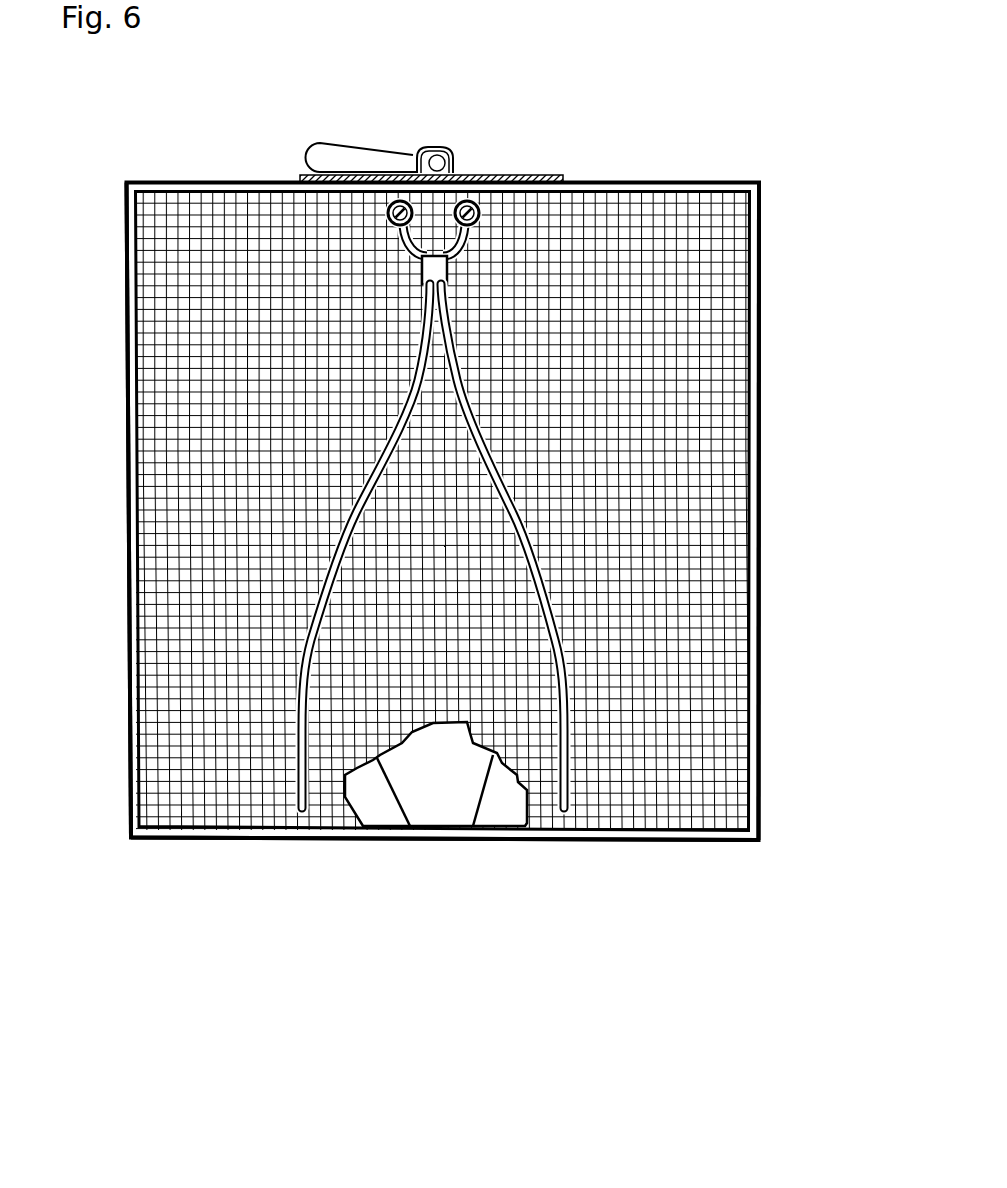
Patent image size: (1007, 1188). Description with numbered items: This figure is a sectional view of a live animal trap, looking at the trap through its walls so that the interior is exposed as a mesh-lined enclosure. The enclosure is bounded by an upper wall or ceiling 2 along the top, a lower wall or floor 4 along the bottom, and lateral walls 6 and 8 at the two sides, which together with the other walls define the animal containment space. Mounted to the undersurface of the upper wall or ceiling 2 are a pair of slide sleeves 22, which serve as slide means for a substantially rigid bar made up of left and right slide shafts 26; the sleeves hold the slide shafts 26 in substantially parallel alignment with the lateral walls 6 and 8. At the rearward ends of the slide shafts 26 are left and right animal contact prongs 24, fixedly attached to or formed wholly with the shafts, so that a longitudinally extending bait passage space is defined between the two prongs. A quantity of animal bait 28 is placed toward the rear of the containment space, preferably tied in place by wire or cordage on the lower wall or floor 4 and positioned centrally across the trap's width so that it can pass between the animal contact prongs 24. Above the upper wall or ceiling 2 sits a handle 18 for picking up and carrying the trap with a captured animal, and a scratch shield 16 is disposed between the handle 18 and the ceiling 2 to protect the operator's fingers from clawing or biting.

The upper wall or ceiling 2 is at (690, 183).
The lower wall or floor 4 is at (663, 836).
The left lateral wall 6 is at (760, 437).
The right lateral wall 8 is at (128, 462).
The scratch shield 16 is at (520, 175).
The handle 18 is at (345, 143).
The slide sleeves 22 is at (390, 212).
The animal contact prongs 24 is at (300, 667).
The slide shafts 26 is at (390, 225).
The animal bait 28 is at (440, 788).